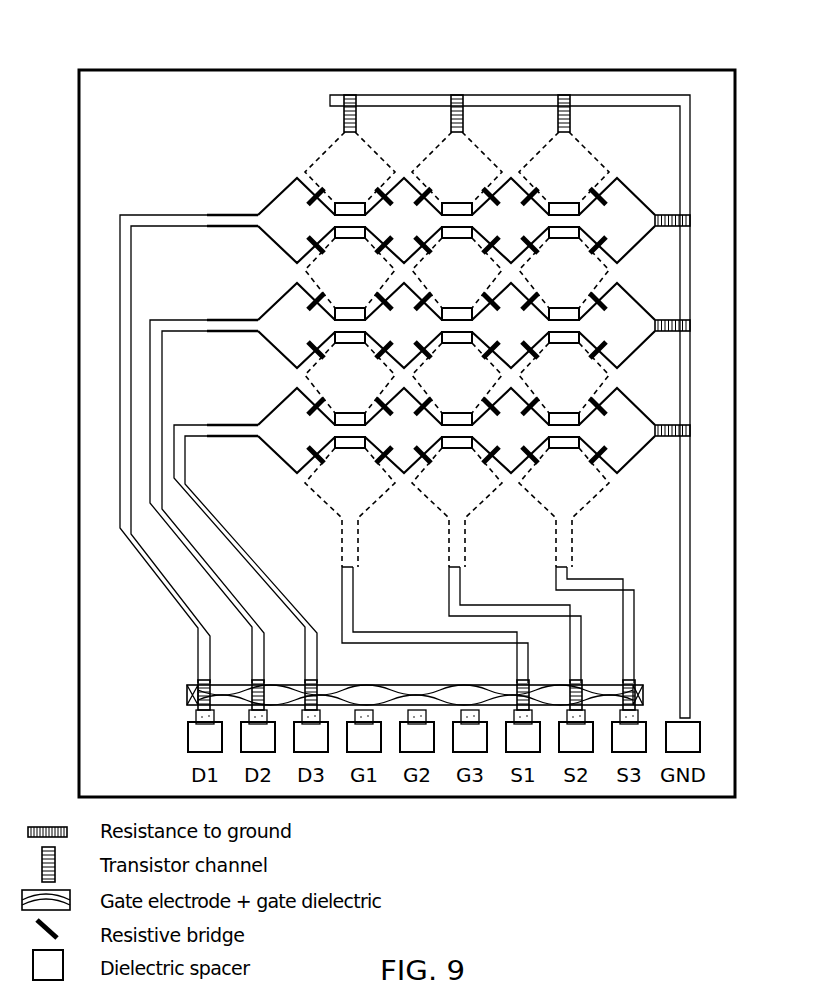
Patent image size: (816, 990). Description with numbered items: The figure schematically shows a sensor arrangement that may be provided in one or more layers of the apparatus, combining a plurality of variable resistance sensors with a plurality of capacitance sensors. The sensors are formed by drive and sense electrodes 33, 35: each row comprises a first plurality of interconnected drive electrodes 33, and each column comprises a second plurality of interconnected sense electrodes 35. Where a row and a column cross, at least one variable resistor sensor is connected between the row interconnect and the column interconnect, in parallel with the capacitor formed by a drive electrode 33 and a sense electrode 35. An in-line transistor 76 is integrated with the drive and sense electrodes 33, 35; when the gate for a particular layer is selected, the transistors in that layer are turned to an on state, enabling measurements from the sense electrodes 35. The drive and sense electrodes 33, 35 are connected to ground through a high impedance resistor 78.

The drive electrodes 33 is at (270, 202).
The sense electrodes 35 is at (372, 148).
The in-line transistor 76 is at (190, 688).
The high impedance resistor 78 is at (351, 95).